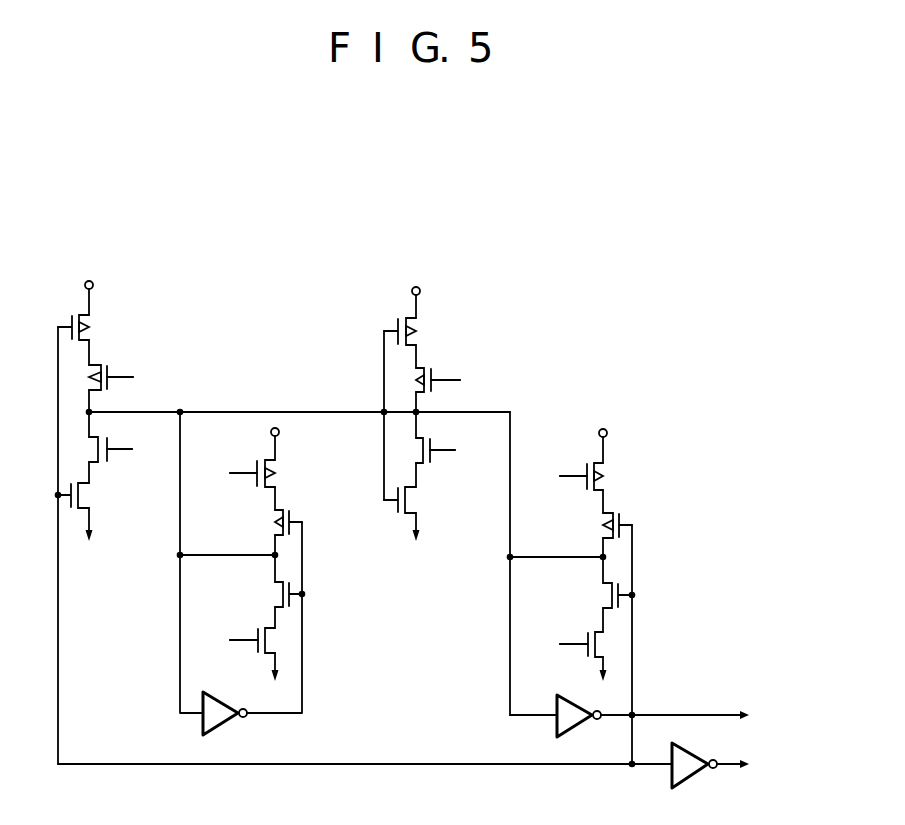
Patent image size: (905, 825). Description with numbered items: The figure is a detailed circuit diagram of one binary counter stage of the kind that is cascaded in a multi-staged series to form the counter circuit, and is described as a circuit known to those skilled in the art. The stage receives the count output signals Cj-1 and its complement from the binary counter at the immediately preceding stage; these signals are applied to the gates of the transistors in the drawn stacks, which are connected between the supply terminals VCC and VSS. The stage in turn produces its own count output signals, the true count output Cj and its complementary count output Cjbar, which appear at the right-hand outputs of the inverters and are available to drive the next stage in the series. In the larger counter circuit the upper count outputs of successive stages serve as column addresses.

The positive supply voltage terminal VCC is at (349, 352).
The ground/negative supply terminal VSS is at (345, 620).
The count output signal from the immediately preceding stage Cj-1 is at (347, 516).
The count output signal of this stage Cj is at (688, 722).
The complementary count output signal of this stage Cjbar is at (769, 753).